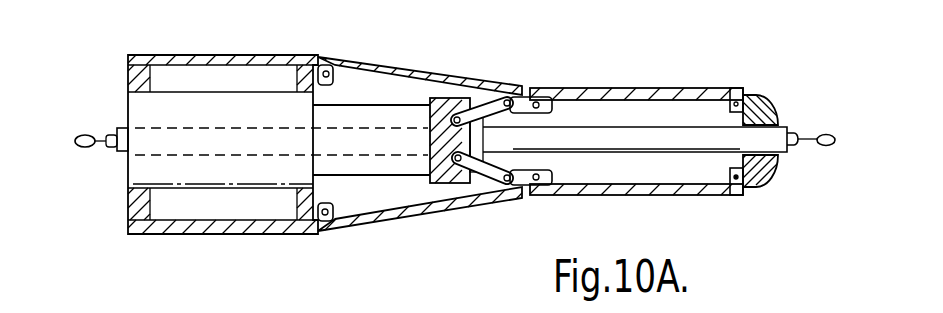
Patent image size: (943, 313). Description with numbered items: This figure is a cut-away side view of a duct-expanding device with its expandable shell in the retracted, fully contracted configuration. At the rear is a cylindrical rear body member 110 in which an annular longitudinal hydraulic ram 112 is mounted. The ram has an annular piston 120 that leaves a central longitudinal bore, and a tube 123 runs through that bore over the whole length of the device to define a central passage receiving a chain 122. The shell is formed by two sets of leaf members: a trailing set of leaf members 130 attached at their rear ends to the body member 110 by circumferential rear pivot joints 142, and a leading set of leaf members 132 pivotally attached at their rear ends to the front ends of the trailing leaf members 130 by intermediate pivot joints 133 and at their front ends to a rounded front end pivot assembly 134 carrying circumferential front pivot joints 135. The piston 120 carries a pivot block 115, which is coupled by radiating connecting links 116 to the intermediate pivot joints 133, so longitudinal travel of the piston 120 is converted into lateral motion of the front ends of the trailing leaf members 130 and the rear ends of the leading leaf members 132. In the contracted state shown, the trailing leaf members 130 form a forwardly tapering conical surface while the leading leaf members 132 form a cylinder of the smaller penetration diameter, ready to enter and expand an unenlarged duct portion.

The cylindrical rear body member 110 is at (263, 55).
The longitudinal hydraulic ram 112 is at (148, 140).
The pivot block 115 is at (447, 98).
The connecting links 116 is at (496, 98).
The annular piston 120 is at (383, 160).
The chain 122 is at (83, 133).
The tube 123 is at (120, 128).
The trailing leaf members 130 is at (411, 67).
The leading leaf members 132 is at (645, 88).
The intermediate pivot joints 133 is at (545, 98).
The rounded front end pivot assembly 134 is at (767, 100).
The front pivot joints 135 is at (737, 88).
The rear pivot joints 142 is at (326, 64).